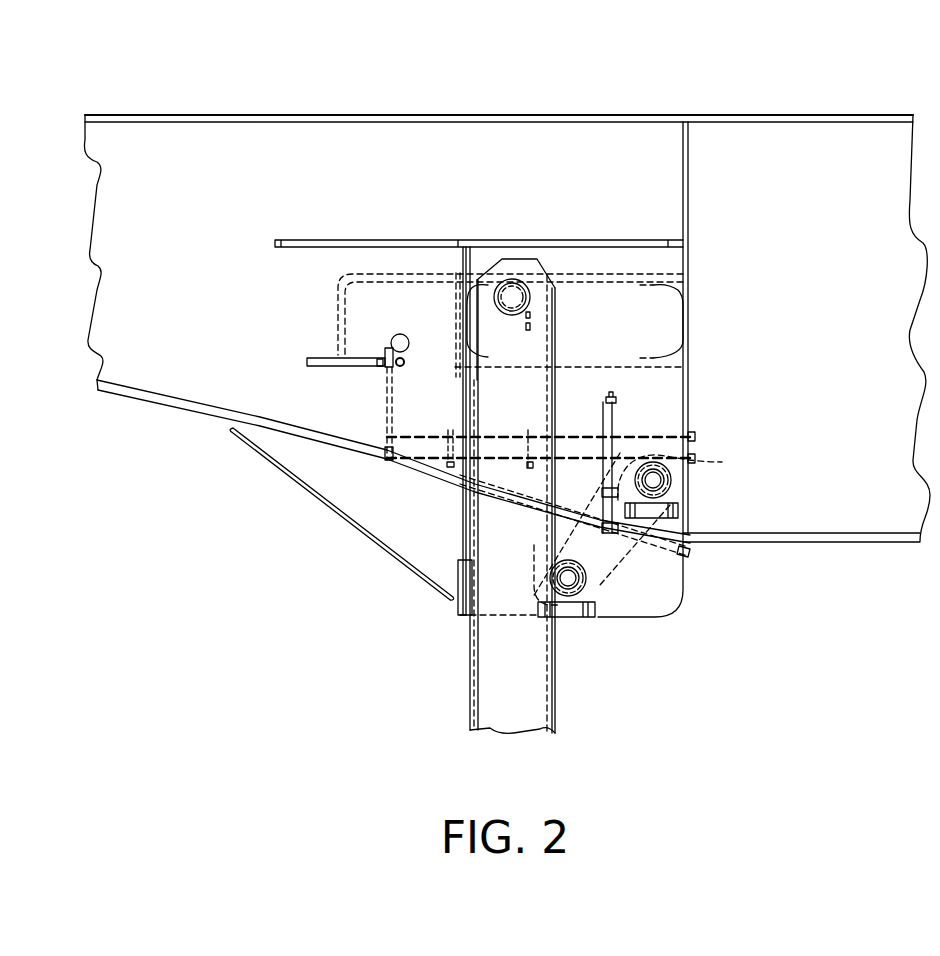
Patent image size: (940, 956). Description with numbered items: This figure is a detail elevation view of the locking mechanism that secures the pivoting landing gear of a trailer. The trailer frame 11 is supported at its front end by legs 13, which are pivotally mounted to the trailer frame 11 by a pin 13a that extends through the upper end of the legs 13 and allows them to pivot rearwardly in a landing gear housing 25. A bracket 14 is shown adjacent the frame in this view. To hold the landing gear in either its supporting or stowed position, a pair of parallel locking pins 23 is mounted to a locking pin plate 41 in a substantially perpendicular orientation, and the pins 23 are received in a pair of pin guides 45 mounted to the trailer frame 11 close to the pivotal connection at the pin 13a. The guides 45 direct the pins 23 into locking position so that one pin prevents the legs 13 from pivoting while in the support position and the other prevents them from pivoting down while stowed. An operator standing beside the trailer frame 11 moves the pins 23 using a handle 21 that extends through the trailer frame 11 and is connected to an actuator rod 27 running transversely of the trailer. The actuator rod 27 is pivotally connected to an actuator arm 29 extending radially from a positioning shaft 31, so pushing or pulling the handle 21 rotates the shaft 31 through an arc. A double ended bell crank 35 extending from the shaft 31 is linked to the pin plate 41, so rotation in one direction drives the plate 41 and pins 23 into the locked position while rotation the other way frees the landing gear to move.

The trailer frame 11 is at (764, 104).
The legs 13 is at (472, 695).
The pin 13a is at (512, 293).
The bracket 14 is at (458, 302).
The handle 21 is at (307, 362).
The locking pins 23 is at (668, 480).
The landing gear housing 25 is at (663, 603).
The actuator rod 27 is at (402, 372).
The actuator arm 29 is at (387, 401).
The positioning shaft 31 is at (662, 436).
The double ended bell crank 35 is at (653, 400).
The locking pin plate 41 is at (620, 557).
The pin guides 45 is at (688, 474).